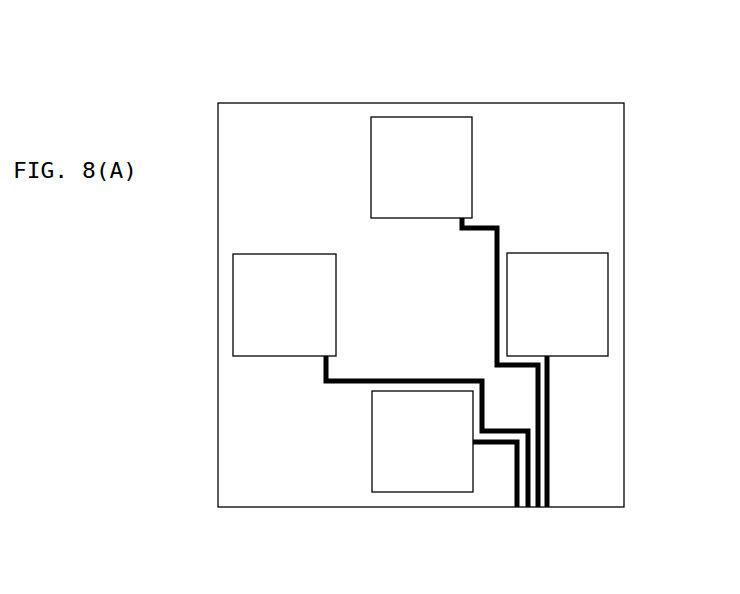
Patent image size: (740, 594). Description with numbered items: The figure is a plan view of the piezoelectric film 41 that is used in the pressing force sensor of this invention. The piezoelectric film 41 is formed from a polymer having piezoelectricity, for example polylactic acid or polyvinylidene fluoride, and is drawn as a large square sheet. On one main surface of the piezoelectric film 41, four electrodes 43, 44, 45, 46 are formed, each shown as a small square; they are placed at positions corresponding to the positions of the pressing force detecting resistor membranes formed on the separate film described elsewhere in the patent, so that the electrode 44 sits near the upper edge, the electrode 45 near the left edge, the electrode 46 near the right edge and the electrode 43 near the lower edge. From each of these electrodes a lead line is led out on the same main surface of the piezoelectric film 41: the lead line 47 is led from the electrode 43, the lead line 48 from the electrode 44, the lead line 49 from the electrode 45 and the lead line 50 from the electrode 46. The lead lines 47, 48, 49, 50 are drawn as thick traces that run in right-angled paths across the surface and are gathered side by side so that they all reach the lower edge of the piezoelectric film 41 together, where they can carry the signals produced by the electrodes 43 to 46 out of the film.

The piezoelectric film 41 is at (614, 128).
The electrode 43 is at (423, 481).
The electrode 44 is at (403, 125).
The electrode 45 is at (243, 311).
The electrode 46 is at (603, 299).
The lead line 47 is at (517, 472).
The lead line 48 is at (542, 467).
The lead line 49 is at (337, 385).
The lead line 50 is at (550, 415).